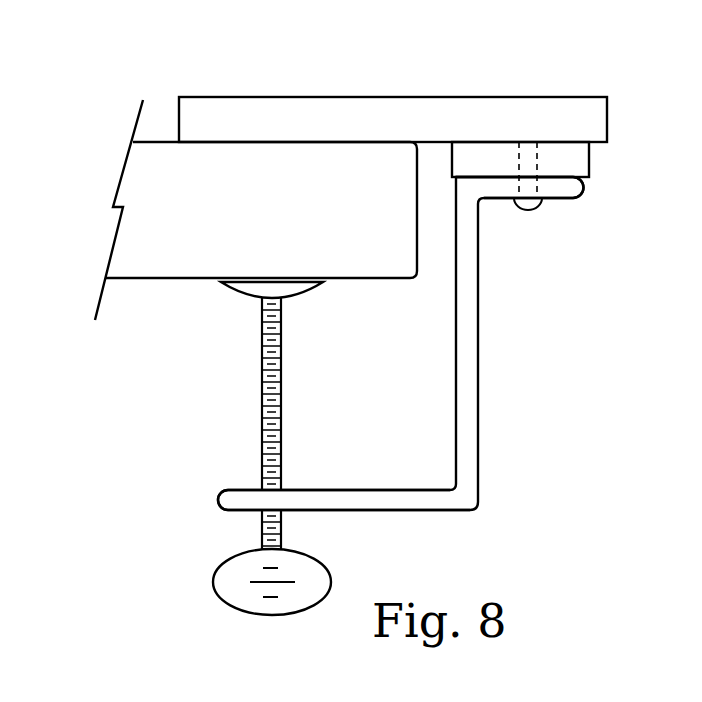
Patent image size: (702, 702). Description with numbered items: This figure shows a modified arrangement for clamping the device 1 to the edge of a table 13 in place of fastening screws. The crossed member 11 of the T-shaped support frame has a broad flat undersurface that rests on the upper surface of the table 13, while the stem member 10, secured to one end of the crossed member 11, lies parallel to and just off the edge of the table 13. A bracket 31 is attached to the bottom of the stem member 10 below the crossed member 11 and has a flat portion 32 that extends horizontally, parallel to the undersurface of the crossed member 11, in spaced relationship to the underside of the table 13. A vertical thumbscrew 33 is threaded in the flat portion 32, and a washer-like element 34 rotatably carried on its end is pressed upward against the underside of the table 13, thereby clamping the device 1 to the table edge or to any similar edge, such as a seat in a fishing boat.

The device 1 is at (422, 278).
The stem member 10 is at (578, 162).
The crossed member 11 is at (223, 112).
The table 13 is at (170, 258).
The bracket 31 is at (470, 338).
The flat portion 32 is at (558, 197).
The thumbscrew 33 is at (280, 397).
The washer-like element 34 is at (290, 288).